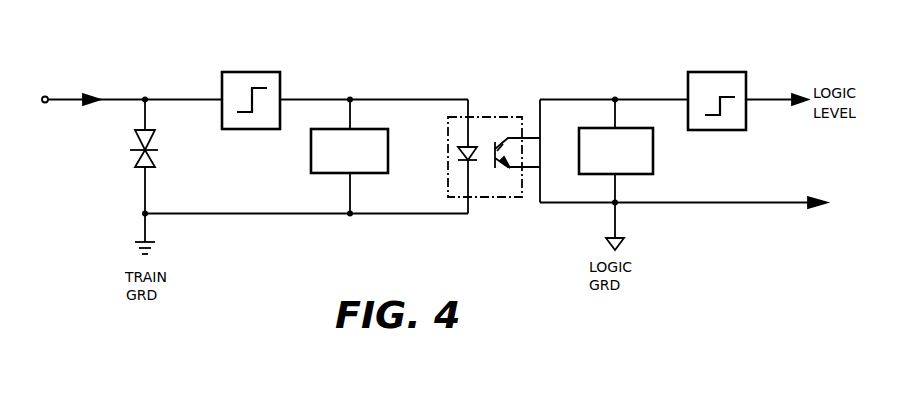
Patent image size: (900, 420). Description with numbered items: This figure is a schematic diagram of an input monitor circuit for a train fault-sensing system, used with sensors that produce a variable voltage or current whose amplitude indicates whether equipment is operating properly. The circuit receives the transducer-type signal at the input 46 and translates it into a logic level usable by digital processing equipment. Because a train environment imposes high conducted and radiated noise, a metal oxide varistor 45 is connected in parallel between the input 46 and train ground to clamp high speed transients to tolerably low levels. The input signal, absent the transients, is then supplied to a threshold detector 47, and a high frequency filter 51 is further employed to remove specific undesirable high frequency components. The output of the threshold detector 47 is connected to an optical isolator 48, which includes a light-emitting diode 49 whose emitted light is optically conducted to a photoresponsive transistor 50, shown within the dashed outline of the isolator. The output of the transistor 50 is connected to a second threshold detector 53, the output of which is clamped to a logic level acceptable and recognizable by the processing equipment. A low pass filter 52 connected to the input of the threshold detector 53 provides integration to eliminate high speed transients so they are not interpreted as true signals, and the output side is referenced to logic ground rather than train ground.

The metal oxide varistor 45 is at (153, 154).
The input 46 is at (45, 96).
The threshold detector 47 is at (268, 72).
The optical isolator 48 is at (497, 117).
The light-emitting diode 49 is at (477, 159).
The photoresponsive transistor 50 is at (506, 170).
The high frequency filter 51 is at (311, 158).
The low pass filter 52 is at (653, 152).
The threshold detector 53 is at (710, 72).